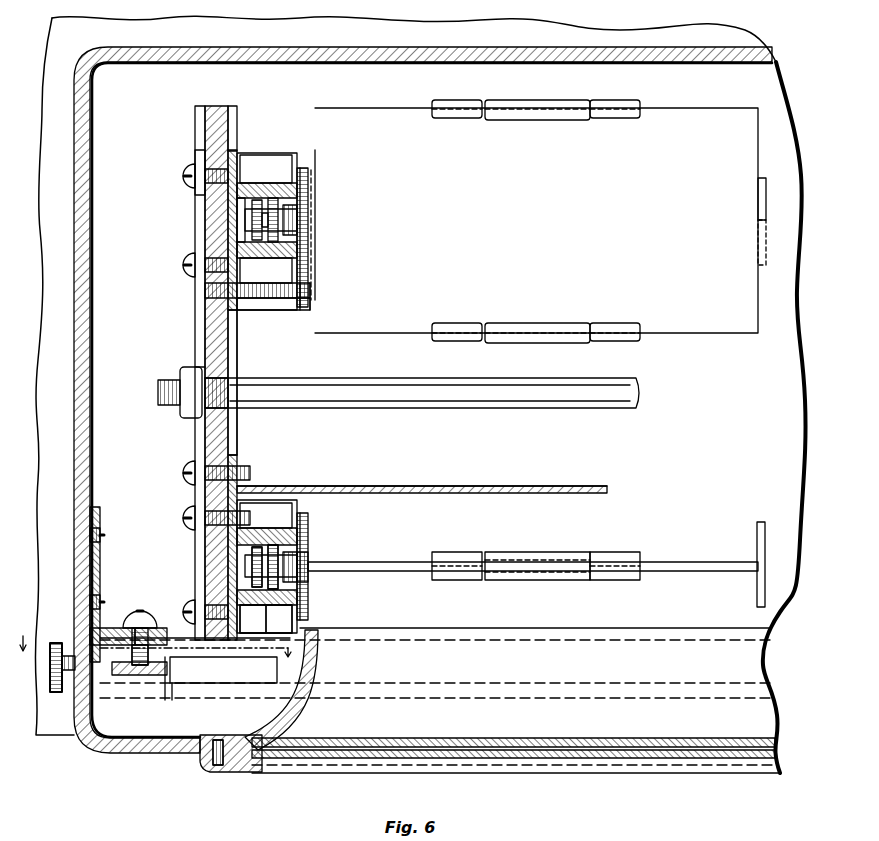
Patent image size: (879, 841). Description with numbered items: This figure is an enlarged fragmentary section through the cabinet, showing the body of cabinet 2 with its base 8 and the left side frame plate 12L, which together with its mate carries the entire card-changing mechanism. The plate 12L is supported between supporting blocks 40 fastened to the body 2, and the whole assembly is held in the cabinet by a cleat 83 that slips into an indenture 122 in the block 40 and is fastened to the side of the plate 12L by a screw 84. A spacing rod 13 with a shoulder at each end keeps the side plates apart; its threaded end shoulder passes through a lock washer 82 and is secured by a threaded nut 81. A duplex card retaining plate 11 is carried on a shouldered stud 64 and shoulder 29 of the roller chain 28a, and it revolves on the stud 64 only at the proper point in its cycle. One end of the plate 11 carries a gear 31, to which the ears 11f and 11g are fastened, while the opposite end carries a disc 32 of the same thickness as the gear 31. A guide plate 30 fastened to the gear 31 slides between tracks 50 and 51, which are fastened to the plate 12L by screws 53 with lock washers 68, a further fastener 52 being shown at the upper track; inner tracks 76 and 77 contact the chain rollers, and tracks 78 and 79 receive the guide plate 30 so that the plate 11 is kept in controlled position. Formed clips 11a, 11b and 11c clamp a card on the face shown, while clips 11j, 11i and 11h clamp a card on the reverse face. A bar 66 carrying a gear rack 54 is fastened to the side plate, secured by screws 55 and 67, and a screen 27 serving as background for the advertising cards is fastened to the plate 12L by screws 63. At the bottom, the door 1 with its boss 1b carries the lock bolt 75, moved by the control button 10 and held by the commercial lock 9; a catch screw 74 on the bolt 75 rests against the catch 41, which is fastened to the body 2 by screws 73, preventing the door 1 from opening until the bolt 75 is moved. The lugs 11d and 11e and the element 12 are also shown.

The door 1 is at (152, 755).
The boss 1b is at (292, 720).
The body of cabinet 2 is at (758, 63).
The base 8 is at (746, 40).
The commercial lock 9 is at (256, 675).
The control button 10 is at (55, 692).
The duplex card retaining plate 11 is at (720, 108).
The formed clip 11a is at (632, 338).
The formed clip 11b is at (480, 338).
The formed clip 11c is at (554, 118).
The panel lug 11d is at (766, 185).
The panel lug 11e is at (766, 258).
The ear 11f is at (317, 232).
The ear 11g is at (313, 195).
The formed clip 11h is at (622, 118).
The formed clip 11i is at (462, 118).
The formed clip 11j is at (574, 338).
The adjusting rod 12 is at (156, 646).
The side frame plate 12L is at (218, 106).
The spacing rod 13 is at (522, 408).
The screen 27 is at (388, 487).
The roller chain 28a is at (245, 220).
The shoulder 29 is at (272, 497).
The guide plate 30 is at (298, 170).
The gear 31 is at (305, 168).
The disc 32 is at (305, 522).
The supporting block 40 is at (238, 364).
The catch 41 is at (99, 586).
The track 50 is at (252, 153).
The track 51 is at (237, 243).
The screw 52 is at (192, 168).
The screw 53 is at (186, 270).
The gear rack 54 is at (300, 310).
The screw 55 is at (312, 292).
The screw 63 is at (247, 472).
The stud 64 is at (309, 560).
The bar 66 is at (248, 308).
The screw 67 is at (205, 292).
The lock washer 68 is at (200, 194).
The screw 73 is at (80, 537).
The catch screw 74 is at (149, 614).
The lock bolt 75 is at (140, 676).
The track 76 is at (256, 548).
The track 77 is at (253, 618).
The track 78 is at (279, 618).
The track 79 is at (280, 548).
The threaded nut 81 is at (186, 418).
The lock washer 82 is at (200, 368).
The cleat 83 is at (200, 575).
The screw 84 is at (200, 567).
The indenture 122 is at (193, 560).